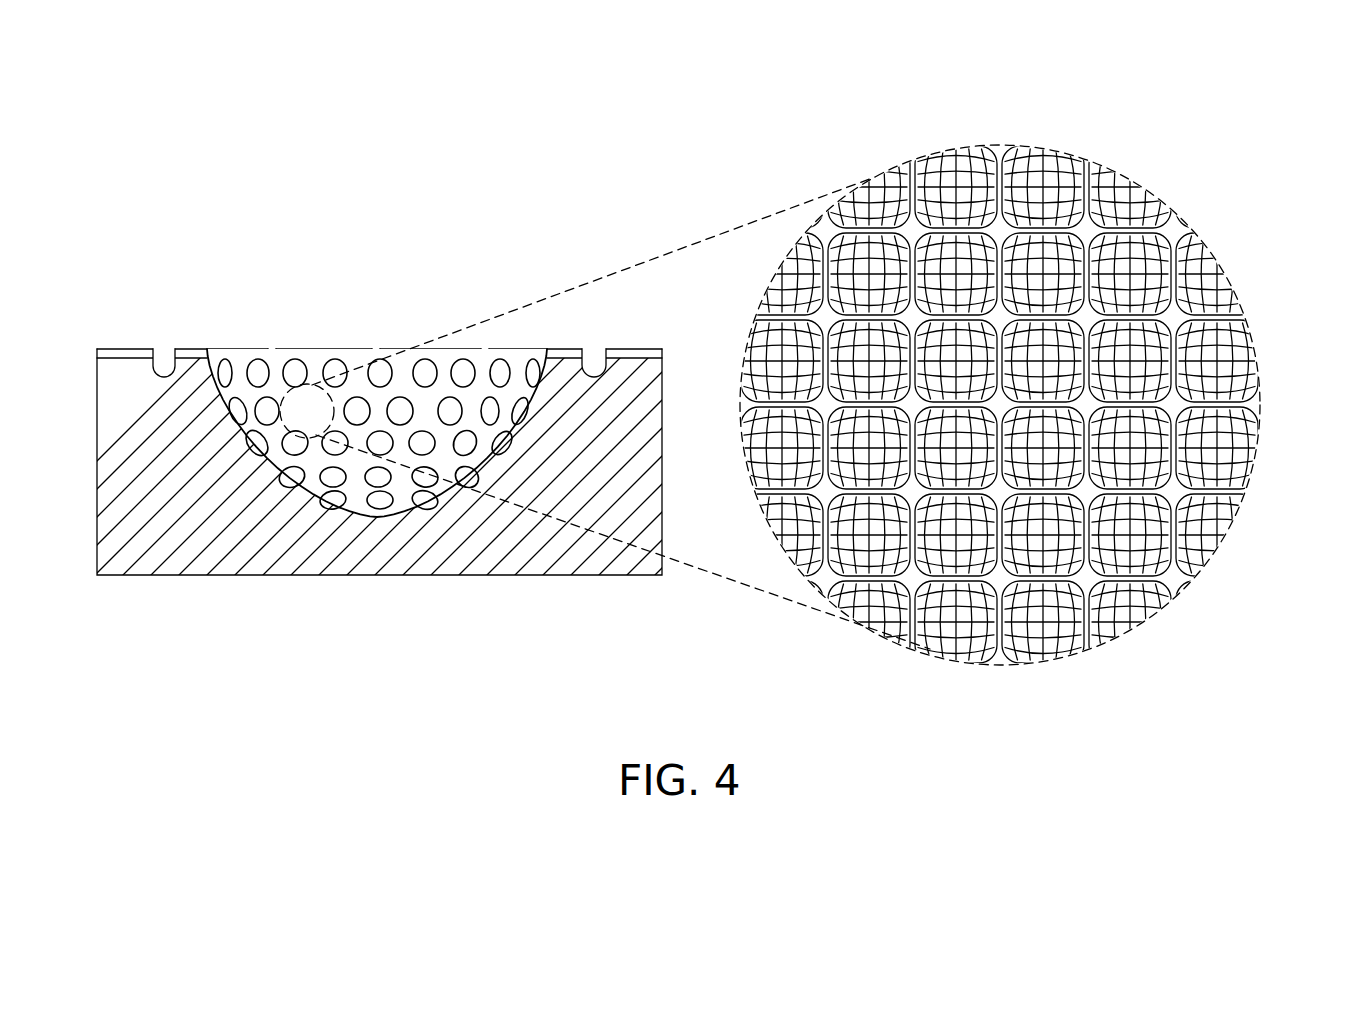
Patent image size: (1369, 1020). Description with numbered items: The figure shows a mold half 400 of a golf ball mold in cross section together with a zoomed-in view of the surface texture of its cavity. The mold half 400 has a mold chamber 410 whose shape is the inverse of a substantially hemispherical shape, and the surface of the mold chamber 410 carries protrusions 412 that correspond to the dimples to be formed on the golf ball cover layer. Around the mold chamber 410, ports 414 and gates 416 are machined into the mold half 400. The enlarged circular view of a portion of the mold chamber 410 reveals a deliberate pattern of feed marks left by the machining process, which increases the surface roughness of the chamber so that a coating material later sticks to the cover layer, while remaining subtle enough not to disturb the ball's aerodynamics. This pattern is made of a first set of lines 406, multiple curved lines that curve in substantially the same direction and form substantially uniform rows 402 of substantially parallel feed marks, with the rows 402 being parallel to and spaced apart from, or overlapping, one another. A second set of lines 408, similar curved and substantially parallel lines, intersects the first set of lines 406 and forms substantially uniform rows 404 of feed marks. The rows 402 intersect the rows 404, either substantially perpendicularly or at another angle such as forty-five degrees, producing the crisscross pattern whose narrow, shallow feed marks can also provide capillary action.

The mold half 400 is at (146, 298).
The rows 402 is at (1150, 210).
The rows 404 is at (785, 277).
The first set of lines 406 is at (843, 580).
The second set of lines 408 is at (910, 635).
The mold chamber 410 is at (313, 360).
The protrusions 412 is at (227, 362).
The ports 414 is at (133, 352).
The gates 416 is at (191, 352).